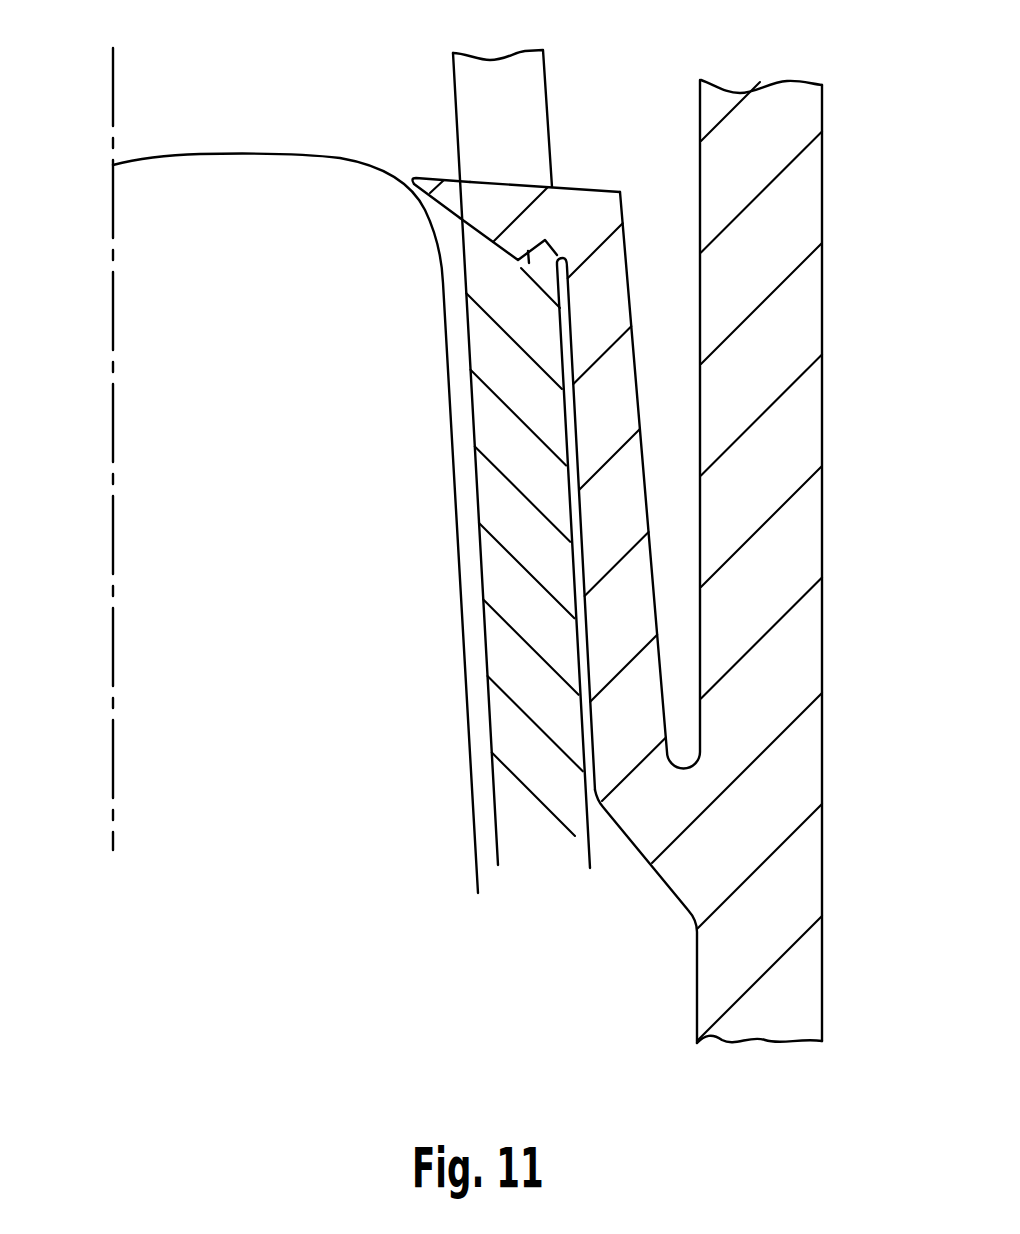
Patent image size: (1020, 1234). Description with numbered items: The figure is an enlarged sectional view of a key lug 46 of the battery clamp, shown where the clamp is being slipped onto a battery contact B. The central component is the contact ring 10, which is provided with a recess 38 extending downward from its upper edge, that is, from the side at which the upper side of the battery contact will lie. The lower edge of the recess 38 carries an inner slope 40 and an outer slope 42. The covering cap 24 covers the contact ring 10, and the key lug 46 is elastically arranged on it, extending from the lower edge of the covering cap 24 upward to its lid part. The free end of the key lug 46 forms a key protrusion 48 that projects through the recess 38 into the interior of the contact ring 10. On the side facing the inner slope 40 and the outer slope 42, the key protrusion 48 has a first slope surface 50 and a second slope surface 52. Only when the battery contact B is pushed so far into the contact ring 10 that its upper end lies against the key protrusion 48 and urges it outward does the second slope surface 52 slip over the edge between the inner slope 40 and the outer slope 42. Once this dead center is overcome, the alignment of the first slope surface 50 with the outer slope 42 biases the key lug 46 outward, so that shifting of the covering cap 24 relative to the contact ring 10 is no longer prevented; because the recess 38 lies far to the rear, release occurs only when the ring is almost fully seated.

The body B is at (184, 155).
The contact ring 10 is at (535, 767).
The covering cap 24 is at (800, 207).
The recess 38 is at (533, 78).
The inner slope 40 is at (527, 262).
The outer slope 42 is at (563, 252).
The key lug 46 is at (598, 433).
The key protrusion 48 is at (448, 197).
The first slope surface 50 is at (455, 212).
The second slope surface 52 is at (520, 268).